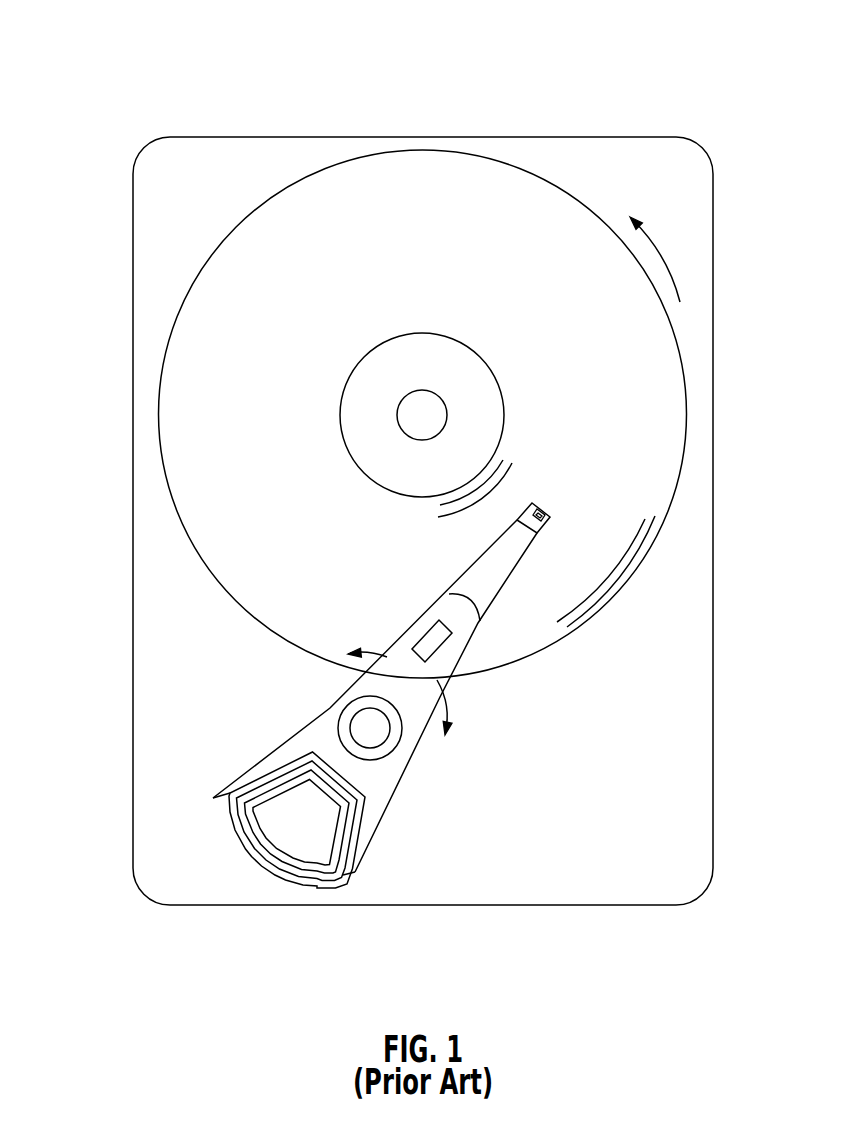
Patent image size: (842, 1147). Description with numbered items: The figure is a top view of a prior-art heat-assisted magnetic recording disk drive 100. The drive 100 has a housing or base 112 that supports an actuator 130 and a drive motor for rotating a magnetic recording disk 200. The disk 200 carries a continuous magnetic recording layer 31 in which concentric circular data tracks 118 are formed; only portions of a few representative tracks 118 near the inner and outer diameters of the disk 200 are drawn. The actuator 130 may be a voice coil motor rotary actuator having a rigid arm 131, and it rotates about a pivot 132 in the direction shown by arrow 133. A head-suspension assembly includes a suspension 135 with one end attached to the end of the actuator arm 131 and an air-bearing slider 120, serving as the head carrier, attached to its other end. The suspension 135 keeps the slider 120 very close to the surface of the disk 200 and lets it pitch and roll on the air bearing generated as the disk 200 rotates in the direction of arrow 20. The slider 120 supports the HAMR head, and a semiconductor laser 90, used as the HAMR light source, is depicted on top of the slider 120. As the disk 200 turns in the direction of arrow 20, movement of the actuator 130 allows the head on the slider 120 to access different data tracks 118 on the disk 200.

The HAMR disk drive 100 is at (130, 53).
The housing or base 112 is at (642, 135).
The disk 200 is at (285, 191).
The arrow 20 is at (653, 243).
The continuous magnetic recording layer 31 is at (667, 382).
The data tracks 118 is at (427, 502).
The semiconductor laser 90 is at (547, 513).
The air-bearing slider 120 is at (538, 530).
The actuator 130 is at (212, 790).
The rigid arm 131 is at (412, 632).
The pivot 132 is at (362, 724).
The arrow 133 is at (445, 712).
The suspension 135 is at (467, 587).